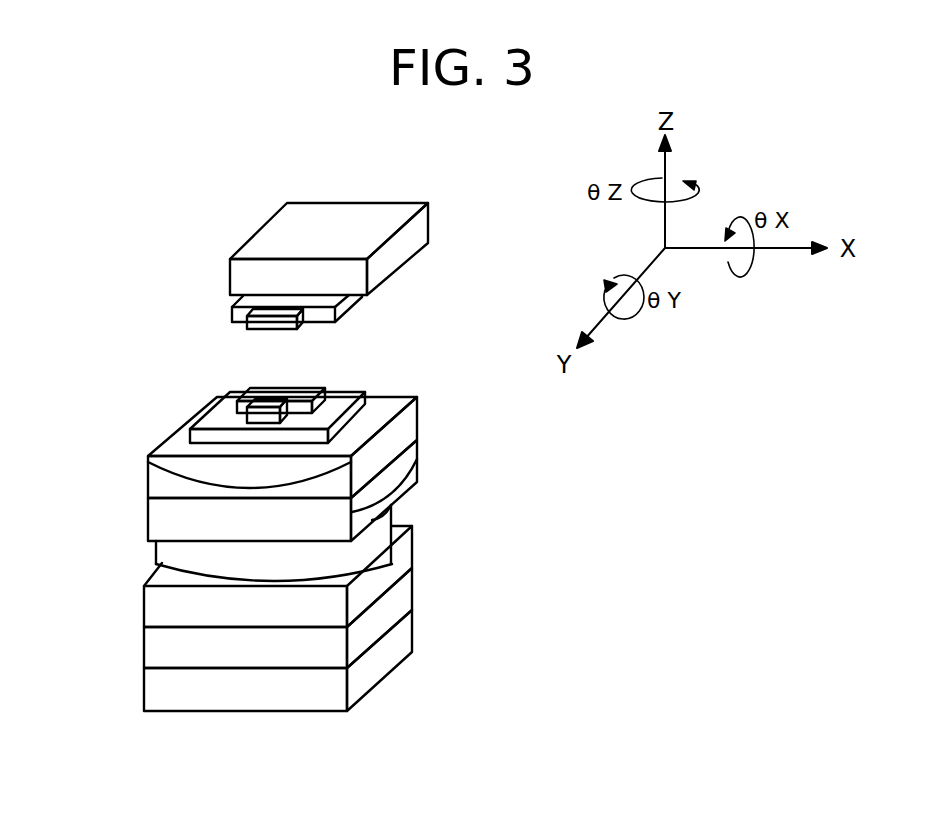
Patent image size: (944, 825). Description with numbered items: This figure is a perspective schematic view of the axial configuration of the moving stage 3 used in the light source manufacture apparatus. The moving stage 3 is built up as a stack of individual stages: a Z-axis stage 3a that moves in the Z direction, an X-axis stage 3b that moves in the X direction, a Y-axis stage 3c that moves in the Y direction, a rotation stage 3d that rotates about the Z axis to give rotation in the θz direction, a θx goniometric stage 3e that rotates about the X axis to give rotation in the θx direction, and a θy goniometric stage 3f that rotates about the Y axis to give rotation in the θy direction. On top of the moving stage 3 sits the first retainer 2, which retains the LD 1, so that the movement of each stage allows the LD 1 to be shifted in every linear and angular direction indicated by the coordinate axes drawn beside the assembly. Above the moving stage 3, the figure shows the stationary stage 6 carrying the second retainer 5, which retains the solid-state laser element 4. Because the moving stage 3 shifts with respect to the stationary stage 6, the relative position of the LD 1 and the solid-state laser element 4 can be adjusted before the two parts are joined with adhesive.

The LD 1 is at (263, 413).
The first retainer 2 is at (302, 393).
The moving stage 3 is at (332, 557).
The Z-axis stage 3a is at (350, 660).
The X-axis stage 3b is at (383, 612).
The Y-axis stage 3c is at (387, 575).
The rotation stage 3d is at (183, 548).
The θx goniometric stage 3e is at (177, 512).
The θy goniometric stage 3f is at (173, 468).
The solid-state laser element 4 is at (270, 323).
The second retainer 5 is at (338, 308).
The stationary stage 6 is at (298, 273).